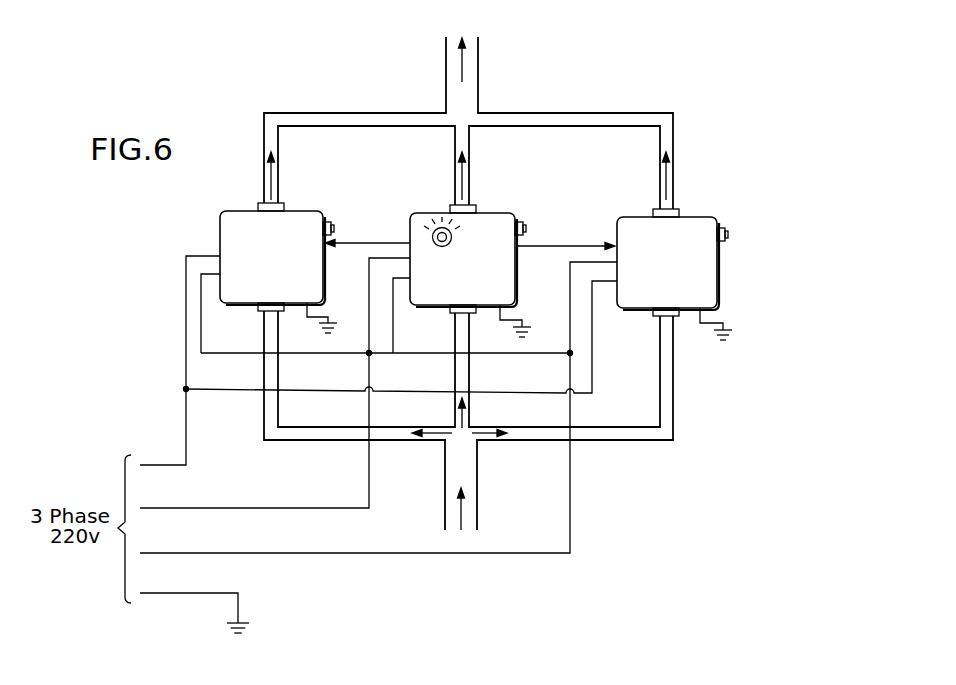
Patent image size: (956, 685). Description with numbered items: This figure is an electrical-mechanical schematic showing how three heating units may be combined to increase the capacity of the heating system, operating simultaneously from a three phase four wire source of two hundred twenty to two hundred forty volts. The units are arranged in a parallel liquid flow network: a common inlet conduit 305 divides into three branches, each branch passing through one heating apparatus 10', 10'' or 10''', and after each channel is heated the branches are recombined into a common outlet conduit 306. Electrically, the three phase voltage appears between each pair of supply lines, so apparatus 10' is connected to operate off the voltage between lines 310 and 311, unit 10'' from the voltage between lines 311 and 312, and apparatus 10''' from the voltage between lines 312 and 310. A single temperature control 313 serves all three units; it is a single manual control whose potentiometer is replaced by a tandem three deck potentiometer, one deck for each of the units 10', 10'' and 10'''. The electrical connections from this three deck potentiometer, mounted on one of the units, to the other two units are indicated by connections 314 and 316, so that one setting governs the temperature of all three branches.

The heating apparatus 10' is at (286, 253).
The heating apparatus 10'' is at (480, 256).
The heating apparatus 10''' is at (692, 258).
The common inlet conduit 305 is at (477, 470).
The common outlet conduit 306 is at (478, 82).
The line 310 is at (186, 463).
The line 311 is at (192, 508).
The line 312 is at (194, 553).
The temperature control 313 is at (435, 226).
The connection 314 is at (357, 240).
The connection 316 is at (548, 245).